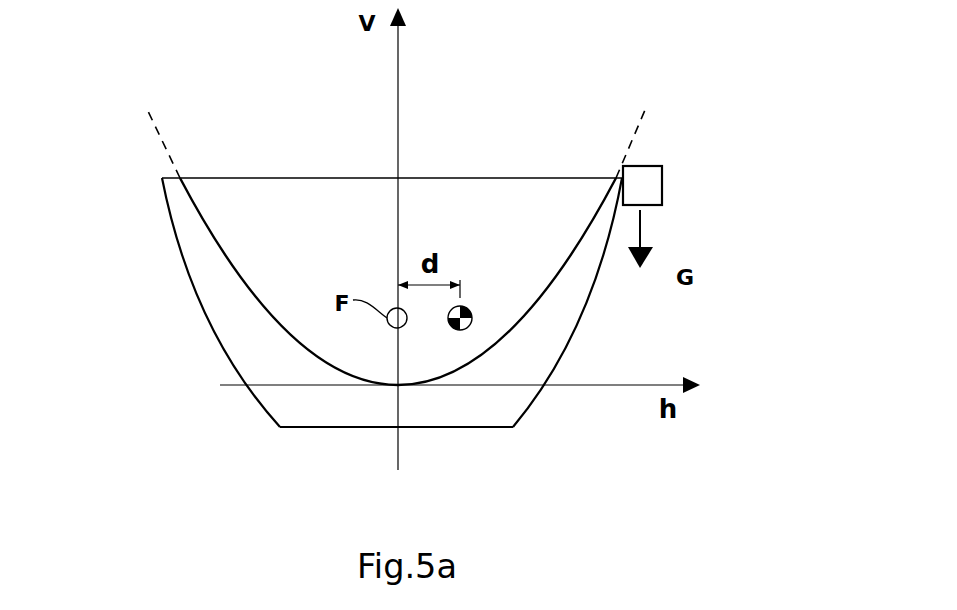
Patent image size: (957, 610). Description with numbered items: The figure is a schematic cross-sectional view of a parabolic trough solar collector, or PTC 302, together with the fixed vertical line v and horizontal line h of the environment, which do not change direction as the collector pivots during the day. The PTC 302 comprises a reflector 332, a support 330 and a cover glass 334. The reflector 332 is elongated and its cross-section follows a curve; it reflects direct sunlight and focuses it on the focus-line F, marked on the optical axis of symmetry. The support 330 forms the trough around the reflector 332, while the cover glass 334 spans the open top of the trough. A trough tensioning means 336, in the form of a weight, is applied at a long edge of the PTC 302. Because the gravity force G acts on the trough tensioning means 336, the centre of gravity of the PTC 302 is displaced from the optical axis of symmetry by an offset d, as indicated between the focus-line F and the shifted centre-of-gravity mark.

The PTC (Parabolic Trough solar Collector) 302 is at (176, 361).
The support 330 is at (308, 416).
The reflector 332 is at (540, 290).
The cover glass 334 is at (477, 177).
The trough tensioning means 336 is at (663, 193).